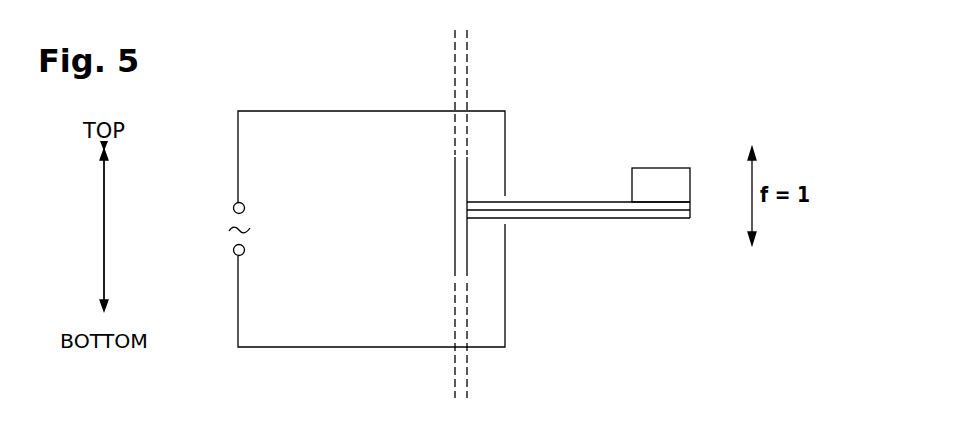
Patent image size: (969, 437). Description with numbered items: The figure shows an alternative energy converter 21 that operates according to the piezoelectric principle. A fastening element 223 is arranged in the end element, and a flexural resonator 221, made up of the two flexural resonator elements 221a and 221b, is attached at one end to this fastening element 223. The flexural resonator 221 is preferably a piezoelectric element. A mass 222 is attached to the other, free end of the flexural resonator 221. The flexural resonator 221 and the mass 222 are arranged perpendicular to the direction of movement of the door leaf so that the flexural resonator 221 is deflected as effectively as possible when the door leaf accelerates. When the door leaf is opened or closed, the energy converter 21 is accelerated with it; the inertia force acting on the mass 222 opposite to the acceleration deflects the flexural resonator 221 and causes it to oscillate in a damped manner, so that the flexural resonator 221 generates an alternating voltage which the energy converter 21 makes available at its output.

The energy converter 21 is at (650, 119).
The flexural resonator 221 is at (607, 227).
The flexural resonator element 221a is at (537, 202).
The flexural resonator element 221b is at (547, 218).
The mass 222 is at (668, 177).
The fastening element 223 is at (462, 186).